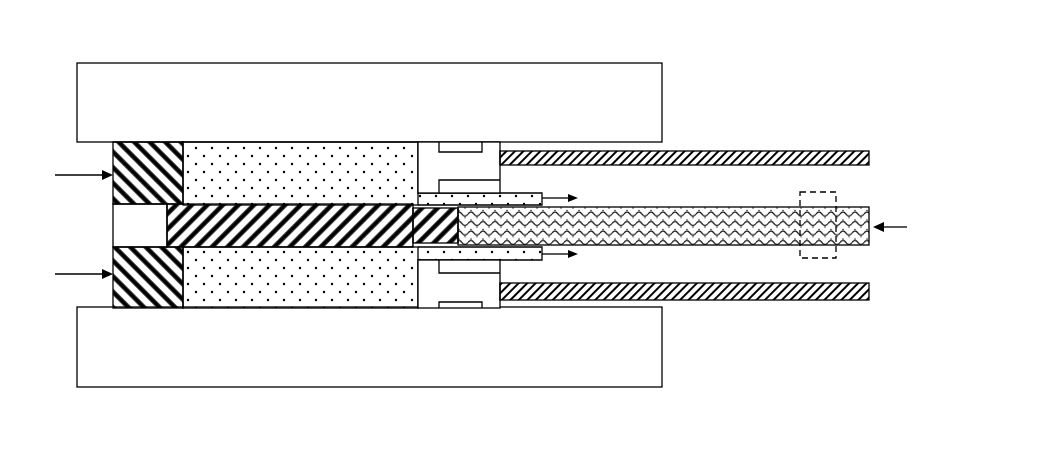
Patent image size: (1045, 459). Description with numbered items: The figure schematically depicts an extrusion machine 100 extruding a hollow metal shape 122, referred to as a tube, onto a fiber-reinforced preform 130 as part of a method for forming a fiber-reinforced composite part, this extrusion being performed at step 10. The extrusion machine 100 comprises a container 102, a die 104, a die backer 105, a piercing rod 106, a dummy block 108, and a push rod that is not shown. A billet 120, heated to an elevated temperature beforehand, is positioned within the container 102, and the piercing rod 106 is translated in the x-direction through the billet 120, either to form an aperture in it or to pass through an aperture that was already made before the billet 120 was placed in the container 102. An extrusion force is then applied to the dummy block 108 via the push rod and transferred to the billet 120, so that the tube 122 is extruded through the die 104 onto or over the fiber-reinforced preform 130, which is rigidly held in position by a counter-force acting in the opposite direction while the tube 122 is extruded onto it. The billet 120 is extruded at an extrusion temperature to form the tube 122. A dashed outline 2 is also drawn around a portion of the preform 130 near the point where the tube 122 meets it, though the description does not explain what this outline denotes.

The step 10 is at (782, 47).
The extrusion machine 100 is at (653, 58).
The container 102 is at (258, 63).
The die 104 is at (455, 163).
The die backer 105 is at (848, 151).
The piercing rod 106 is at (260, 236).
The dummy block 108 is at (148, 153).
The billet 120 is at (287, 160).
The hollow metal shape 122 is at (527, 196).
The fiber-reinforced preform 130 is at (863, 205).
The region 2 is at (820, 260).